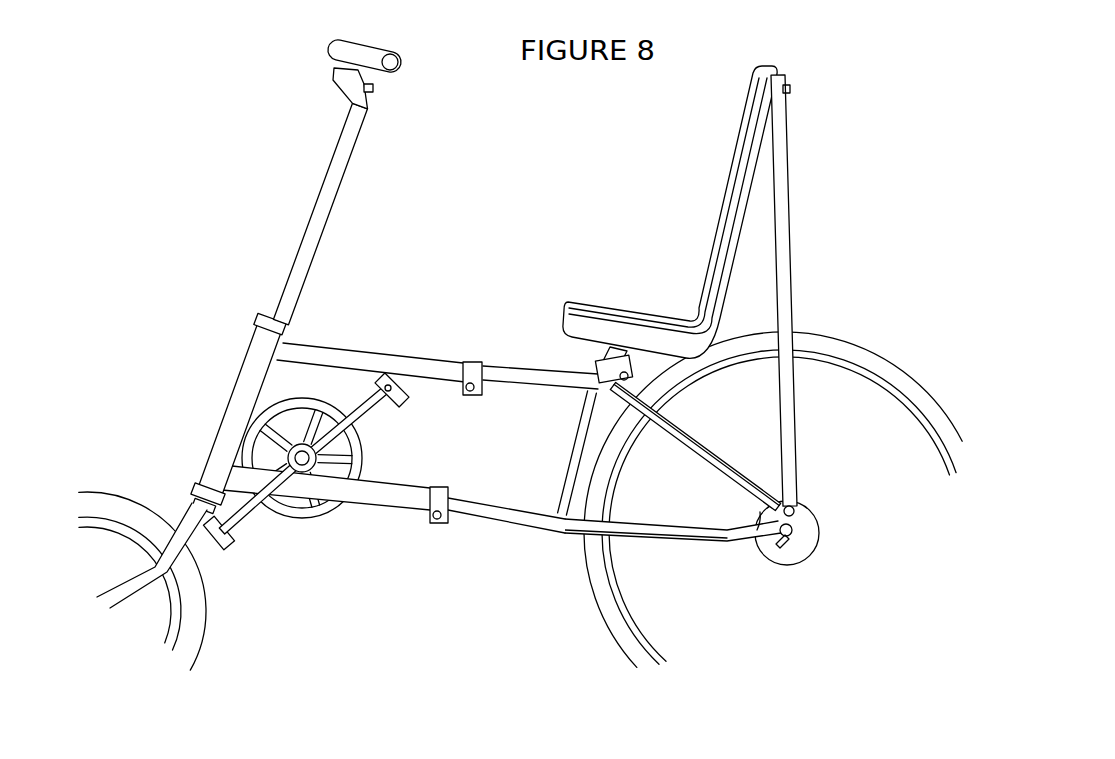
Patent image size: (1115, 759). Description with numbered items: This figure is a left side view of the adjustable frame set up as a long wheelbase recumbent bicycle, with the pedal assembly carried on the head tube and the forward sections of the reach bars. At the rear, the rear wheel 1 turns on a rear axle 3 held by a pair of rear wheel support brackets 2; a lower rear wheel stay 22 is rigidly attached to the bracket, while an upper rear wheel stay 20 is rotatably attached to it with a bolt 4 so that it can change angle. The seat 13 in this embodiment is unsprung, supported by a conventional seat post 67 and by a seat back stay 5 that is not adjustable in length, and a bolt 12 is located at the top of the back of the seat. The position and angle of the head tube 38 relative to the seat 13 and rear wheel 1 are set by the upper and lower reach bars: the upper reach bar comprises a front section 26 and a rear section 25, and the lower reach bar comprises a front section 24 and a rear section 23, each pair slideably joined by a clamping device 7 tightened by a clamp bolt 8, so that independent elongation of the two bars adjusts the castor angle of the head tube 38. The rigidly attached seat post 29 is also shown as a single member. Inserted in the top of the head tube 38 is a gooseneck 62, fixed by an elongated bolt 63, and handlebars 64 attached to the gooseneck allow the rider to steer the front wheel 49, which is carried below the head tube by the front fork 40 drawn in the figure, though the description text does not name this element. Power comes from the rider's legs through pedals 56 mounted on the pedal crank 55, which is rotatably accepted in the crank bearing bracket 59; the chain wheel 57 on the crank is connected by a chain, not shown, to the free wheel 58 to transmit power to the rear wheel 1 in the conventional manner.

The rear wheel 1 is at (895, 375).
The rear wheel support bracket 2 is at (805, 527).
The rear axle 3 is at (793, 540).
The bolt 4 is at (795, 506).
The seat back stay 5 is at (783, 257).
The clamping device 7 is at (473, 362).
The clamp bolt 8 is at (468, 397).
The bolt 12 is at (790, 85).
The seat 13 is at (735, 197).
The upper rear wheel stay 20 is at (695, 453).
The lower rear wheel stay 22 is at (700, 540).
The rear section of lower reach bar 23 is at (507, 530).
The front section of lower reach bar 24 is at (377, 498).
The rear section of upper reach bar 25 is at (520, 373).
The front section of upper reach bar 26 is at (380, 360).
The seat post 29 is at (582, 453).
The head tube 38 is at (228, 408).
The front fork 40 is at (188, 523).
The front wheel 49 is at (103, 503).
The pedal crank 55 is at (240, 515).
The pedal 56 is at (396, 400).
The chain wheel 57 is at (307, 405).
The free wheel 58 is at (787, 557).
The crank bearing bracket 59 is at (316, 458).
The gooseneck 62 is at (327, 188).
The bolt 63 is at (373, 87).
The handlebars 64 is at (337, 50).
The seat post 67 is at (612, 349).